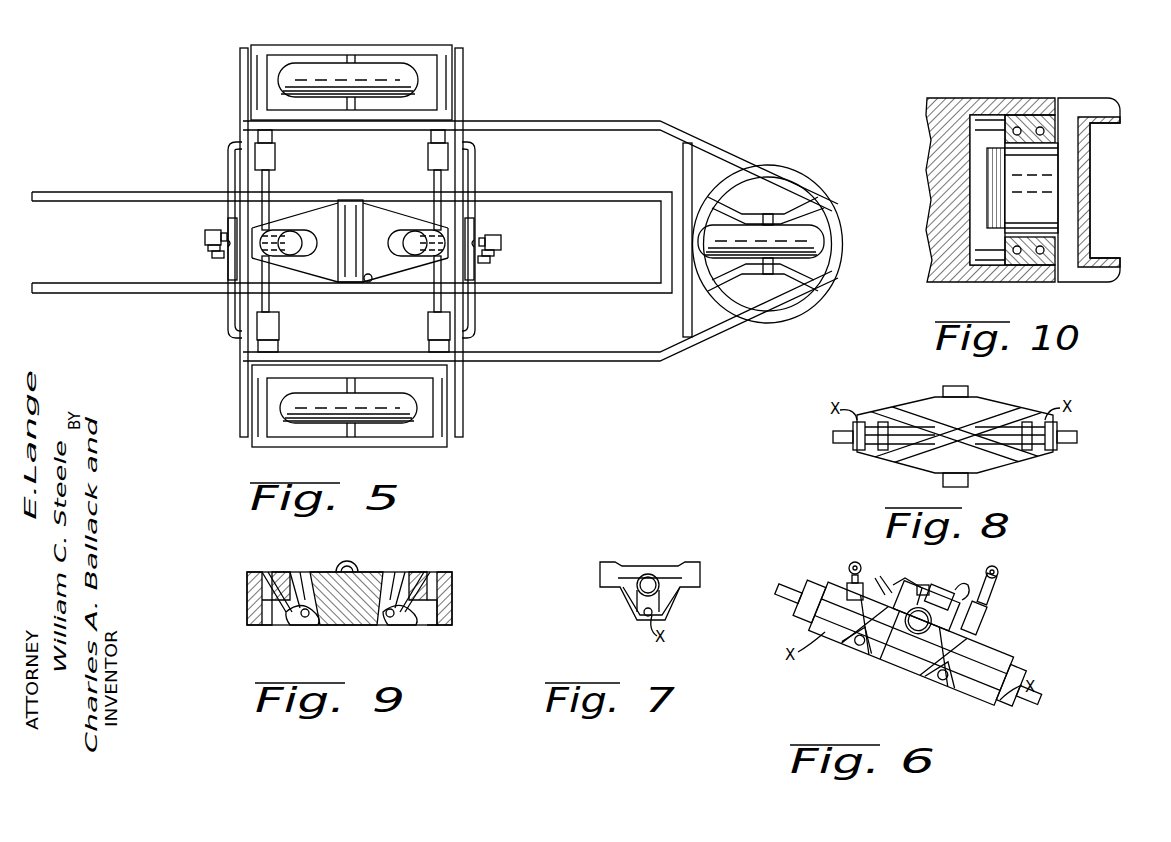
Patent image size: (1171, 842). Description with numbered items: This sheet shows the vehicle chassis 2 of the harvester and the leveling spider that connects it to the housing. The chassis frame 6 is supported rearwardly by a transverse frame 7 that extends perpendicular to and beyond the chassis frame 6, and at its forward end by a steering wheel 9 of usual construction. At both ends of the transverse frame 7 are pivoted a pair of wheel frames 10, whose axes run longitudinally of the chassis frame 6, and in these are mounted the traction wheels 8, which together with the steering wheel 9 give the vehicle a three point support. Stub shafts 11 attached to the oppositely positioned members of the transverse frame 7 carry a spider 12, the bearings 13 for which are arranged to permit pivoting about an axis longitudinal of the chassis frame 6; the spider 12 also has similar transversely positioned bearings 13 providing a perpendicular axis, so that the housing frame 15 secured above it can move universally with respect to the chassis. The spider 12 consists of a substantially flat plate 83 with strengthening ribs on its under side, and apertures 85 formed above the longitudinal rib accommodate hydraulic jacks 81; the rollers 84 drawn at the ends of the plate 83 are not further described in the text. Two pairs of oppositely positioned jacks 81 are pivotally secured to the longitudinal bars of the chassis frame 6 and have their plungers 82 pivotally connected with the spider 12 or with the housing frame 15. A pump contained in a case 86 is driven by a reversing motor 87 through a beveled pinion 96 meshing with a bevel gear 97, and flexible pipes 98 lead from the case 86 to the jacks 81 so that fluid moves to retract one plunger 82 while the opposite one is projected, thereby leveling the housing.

In FIG. 5, the chassis 2 is at (725, 158).
In FIG. 5, the chassis frame 6 is at (570, 357).
In FIG. 10, the chassis frame 6 is at (1088, 230).
In FIG. 5, the transverse frame 7 is at (238, 411).
In FIG. 5, the vehicle wheels 8 is at (400, 68).
In FIG. 5, the steering wheel 9 is at (815, 243).
In FIG. 5, the wheel frames 10 is at (320, 45).
In FIG. 10, the stub shafts 11 is at (1035, 180).
In FIG. 5, the spider 12 is at (359, 241).
In FIG. 8, the spider 12 is at (930, 402).
In FIG. 9, the spider 12 is at (445, 572).
In FIG. 7, the spider 12 is at (632, 572).
In FIG. 6, the spider 12 is at (909, 642).
In FIG. 5, the bearings 13 is at (368, 284).
In FIG. 10, the bearings 13 is at (970, 98).
In FIG. 8, the bearings 13 is at (955, 386).
In FIG. 9, the bearings 13 is at (352, 566).
In FIG. 7, the bearings 13 is at (637, 587).
In FIG. 6, the bearings 13 is at (871, 656).
In FIG. 5, the housing frame 15 is at (600, 194).
In FIG. 5, the hydraulic jacks 81 is at (272, 160).
In FIG. 6, the hydraulic jacks 81 is at (995, 598).
In FIG. 5, the plungers 82 is at (260, 212).
In FIG. 5, the flat plate 83 is at (340, 265).
In FIG. 8, the flat plate 83 is at (935, 465).
In FIG. 9, the flat plate 83 is at (346, 598).
In FIG. 6, the flat plate 83 is at (925, 619).
In FIG. 5, the roller 84 is at (300, 232).
In FIG. 8, the roller 84 is at (905, 438).
In FIG. 9, the roller 84 is at (296, 625).
In FIG. 6, the roller 84 is at (881, 677).
In FIG. 5, the apertures 85 is at (300, 255).
In FIG. 8, the apertures 85 is at (870, 430).
In FIG. 9, the apertures 85 is at (285, 572).
In FIG. 5, the case 86 is at (228, 262).
In FIG. 6, the case 86 is at (905, 578).
In FIG. 5, the reversing motor 87 is at (212, 230).
In FIG. 6, the reversing motor 87 is at (945, 588).
In FIG. 5, the beveled pinion 96 is at (208, 246).
In FIG. 6, the beveled pinion 96 is at (925, 583).
In FIG. 5, the bevel gear 97 is at (212, 255).
In FIG. 5, the flexible pipes 98 is at (228, 318).
In FIG. 6, the flexible pipes 98 is at (924, 571).